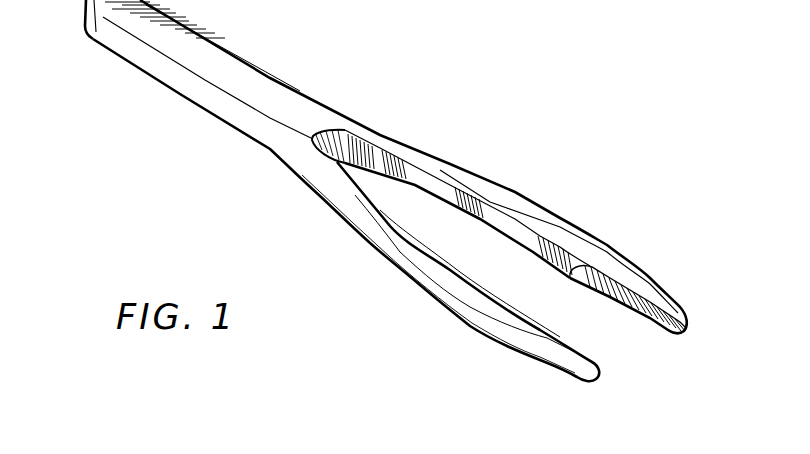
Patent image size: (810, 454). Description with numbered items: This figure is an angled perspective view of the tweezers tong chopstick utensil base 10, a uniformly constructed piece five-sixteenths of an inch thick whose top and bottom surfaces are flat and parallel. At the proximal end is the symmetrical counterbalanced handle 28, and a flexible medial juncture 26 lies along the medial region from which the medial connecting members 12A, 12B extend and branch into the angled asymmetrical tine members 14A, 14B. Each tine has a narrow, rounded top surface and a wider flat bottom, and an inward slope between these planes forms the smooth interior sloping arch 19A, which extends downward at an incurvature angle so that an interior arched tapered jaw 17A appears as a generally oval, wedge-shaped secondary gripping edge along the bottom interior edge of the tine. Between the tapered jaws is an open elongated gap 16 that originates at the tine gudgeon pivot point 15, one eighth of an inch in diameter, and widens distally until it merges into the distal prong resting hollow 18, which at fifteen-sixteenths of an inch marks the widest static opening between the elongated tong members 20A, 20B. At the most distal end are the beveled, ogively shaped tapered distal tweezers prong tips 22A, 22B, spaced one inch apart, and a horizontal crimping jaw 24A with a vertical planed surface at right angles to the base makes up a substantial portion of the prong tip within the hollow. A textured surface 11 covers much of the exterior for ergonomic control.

The tweezers tong chopstick utensil base 10 is at (173, 97).
The textured surface 11 is at (235, 70).
The medial connecting member 12A is at (392, 146).
The medial connecting member 12B is at (330, 208).
The angled asymmetrical tine member 14A is at (505, 186).
The angled asymmetrical tine member 14B is at (400, 281).
The tine gudgeon pivot point 15 is at (328, 136).
The open elongated gap 16 is at (422, 224).
The interior arched tapered jaw 17A is at (537, 249).
The distal prong resting hollow 18 is at (607, 341).
The smooth interior sloping arch 19A is at (523, 221).
The elongated tong member 20A is at (601, 238).
The elongated tong member 20B is at (502, 342).
The tapered distal tweezers prong tip 22A is at (684, 315).
The tapered distal tweezers prong tip 22B is at (596, 377).
The horizontal crimping jaw 24A is at (663, 320).
The flexible medial juncture 26 is at (281, 166).
The symmetrical counterbalanced handle 28 is at (90, 37).